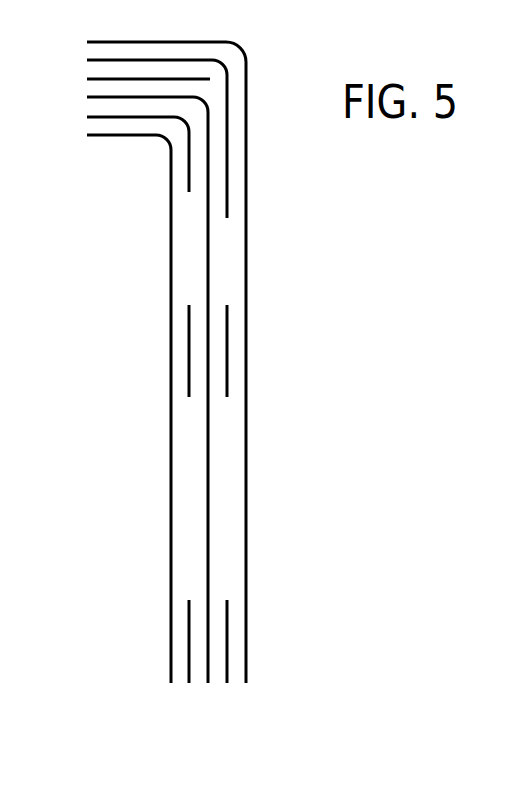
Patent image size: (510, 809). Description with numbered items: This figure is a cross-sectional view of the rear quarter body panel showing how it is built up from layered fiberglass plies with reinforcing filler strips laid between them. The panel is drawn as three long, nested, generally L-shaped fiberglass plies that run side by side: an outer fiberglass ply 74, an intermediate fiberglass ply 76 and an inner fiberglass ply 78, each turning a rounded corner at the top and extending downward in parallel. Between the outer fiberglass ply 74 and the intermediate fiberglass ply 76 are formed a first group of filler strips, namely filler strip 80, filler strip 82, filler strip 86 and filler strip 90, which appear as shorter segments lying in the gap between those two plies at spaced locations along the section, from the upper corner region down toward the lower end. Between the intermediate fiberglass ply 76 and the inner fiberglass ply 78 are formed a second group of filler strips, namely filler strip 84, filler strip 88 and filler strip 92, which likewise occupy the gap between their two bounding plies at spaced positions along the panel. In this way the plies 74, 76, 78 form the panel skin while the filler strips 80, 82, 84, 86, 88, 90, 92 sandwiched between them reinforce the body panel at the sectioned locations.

The fiberglass ply 74 is at (246, 276).
The fiberglass ply 76 is at (208, 508).
The fiberglass ply 78 is at (171, 256).
The filler strip 80 is at (227, 150).
The filler strip 82 is at (87, 79).
The filler strip 84 is at (87, 117).
The filler strip 86 is at (227, 354).
The filler strip 88 is at (189, 345).
The filler strip 90 is at (227, 640).
The filler strip 92 is at (189, 640).